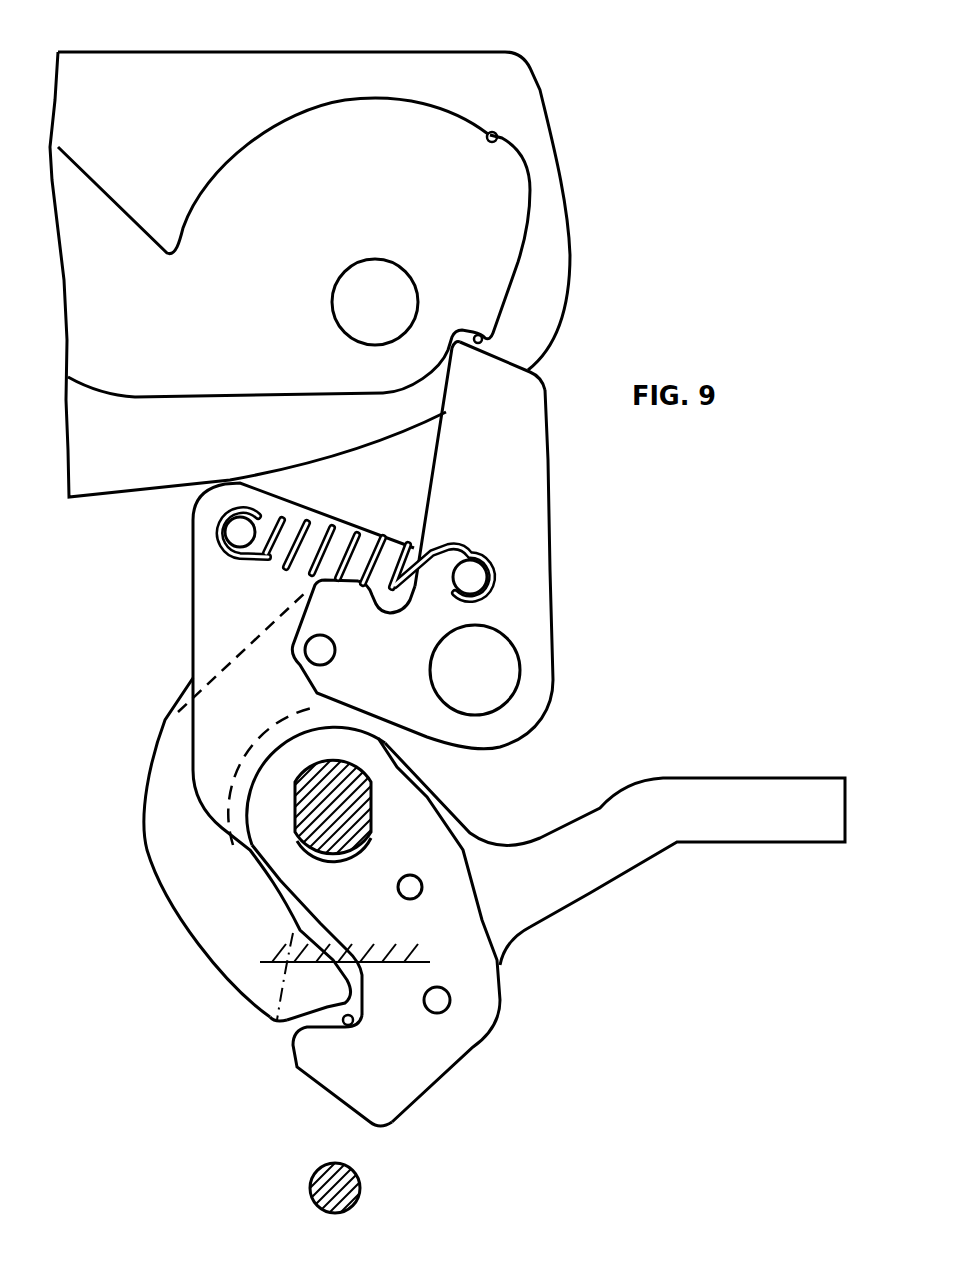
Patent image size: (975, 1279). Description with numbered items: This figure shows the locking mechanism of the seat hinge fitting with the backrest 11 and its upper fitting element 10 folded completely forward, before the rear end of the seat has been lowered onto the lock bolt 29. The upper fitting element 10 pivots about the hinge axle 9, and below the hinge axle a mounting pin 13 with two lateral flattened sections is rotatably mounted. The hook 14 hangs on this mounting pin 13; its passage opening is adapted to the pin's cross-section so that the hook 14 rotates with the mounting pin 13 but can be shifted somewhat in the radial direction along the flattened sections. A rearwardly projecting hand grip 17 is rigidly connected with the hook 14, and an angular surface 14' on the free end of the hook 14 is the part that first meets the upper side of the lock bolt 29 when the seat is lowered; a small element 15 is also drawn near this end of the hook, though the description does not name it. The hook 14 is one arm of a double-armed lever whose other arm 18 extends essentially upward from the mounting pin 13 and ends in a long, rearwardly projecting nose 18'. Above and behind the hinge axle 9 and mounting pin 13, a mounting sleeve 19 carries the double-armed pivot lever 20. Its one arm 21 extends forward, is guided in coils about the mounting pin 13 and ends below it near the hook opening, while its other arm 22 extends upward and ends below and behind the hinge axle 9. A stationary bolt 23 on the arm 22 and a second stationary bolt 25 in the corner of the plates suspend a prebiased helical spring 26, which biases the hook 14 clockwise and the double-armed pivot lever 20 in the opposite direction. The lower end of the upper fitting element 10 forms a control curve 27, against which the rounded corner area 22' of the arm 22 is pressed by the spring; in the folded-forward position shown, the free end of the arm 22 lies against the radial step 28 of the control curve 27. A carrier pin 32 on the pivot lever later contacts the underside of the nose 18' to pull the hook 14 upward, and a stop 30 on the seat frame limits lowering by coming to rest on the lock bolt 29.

The hinge axle 9 is at (363, 267).
The upper fitting element 10 is at (88, 195).
The backrest 11 is at (110, 520).
The mounting pin 13 is at (368, 820).
The hook 14 is at (375, 914).
The angular surface 14' is at (336, 1071).
The pin 15 is at (352, 1022).
The hand grip 17 is at (783, 828).
The arm 18 is at (272, 751).
The nose 18' is at (395, 621).
The mounting sleeve 19 is at (478, 640).
The double-armed pivot lever 20 is at (565, 652).
The arm 21 is at (197, 926).
The arm 22 is at (578, 535).
The rounded corner area 22' is at (502, 373).
The stationary bolt 23 is at (473, 565).
The stationary bolt 25 is at (228, 537).
The helical spring 26 is at (262, 562).
The control curve 27 is at (486, 139).
The radial step 28 is at (477, 330).
The lock bolt 29 is at (360, 1190).
The stop 30 is at (276, 1010).
The carrier pin 32 is at (328, 656).